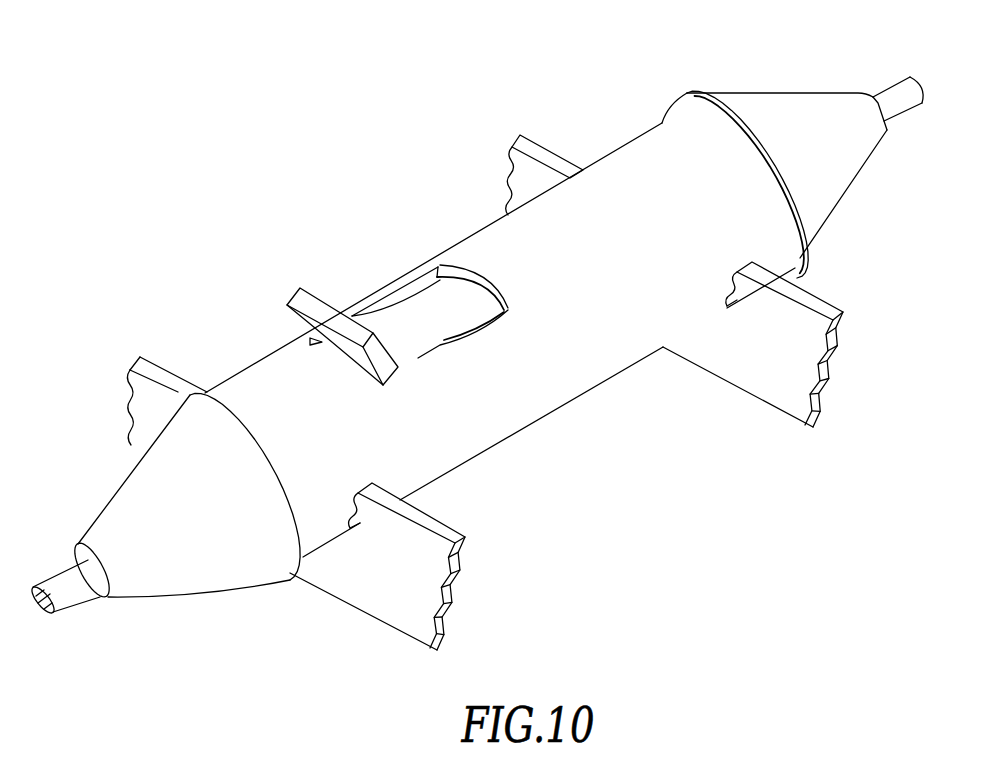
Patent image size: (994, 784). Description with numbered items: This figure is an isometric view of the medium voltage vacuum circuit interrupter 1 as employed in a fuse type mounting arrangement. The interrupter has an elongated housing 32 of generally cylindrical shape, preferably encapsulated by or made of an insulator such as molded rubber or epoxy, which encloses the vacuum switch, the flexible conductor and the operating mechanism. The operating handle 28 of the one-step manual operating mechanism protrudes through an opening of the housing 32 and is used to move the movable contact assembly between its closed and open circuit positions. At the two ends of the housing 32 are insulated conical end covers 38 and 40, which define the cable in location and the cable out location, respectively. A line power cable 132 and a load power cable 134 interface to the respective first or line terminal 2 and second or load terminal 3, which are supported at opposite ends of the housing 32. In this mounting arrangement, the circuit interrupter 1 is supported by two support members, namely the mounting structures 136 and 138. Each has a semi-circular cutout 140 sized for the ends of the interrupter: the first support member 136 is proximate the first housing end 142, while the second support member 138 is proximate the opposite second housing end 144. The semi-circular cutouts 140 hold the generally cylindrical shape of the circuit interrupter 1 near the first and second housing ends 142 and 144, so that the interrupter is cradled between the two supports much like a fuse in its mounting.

The medium voltage vacuum circuit interrupter 1 is at (572, 460).
The first or line terminal 2 is at (857, 202).
The second or load terminal 3 is at (180, 618).
The operating handle 28 is at (325, 300).
The housing 32 is at (478, 225).
The insulated conical end cover 38 is at (782, 92).
The insulated conical end cover 40 is at (110, 485).
The line power cable 132 is at (895, 80).
The load power cable 134 is at (62, 607).
The first support member 136 is at (843, 368).
The second support member 138 is at (465, 592).
The semi-circular cutout 140 is at (338, 528).
The first housing end 142 is at (645, 157).
The second housing end 144 is at (260, 390).